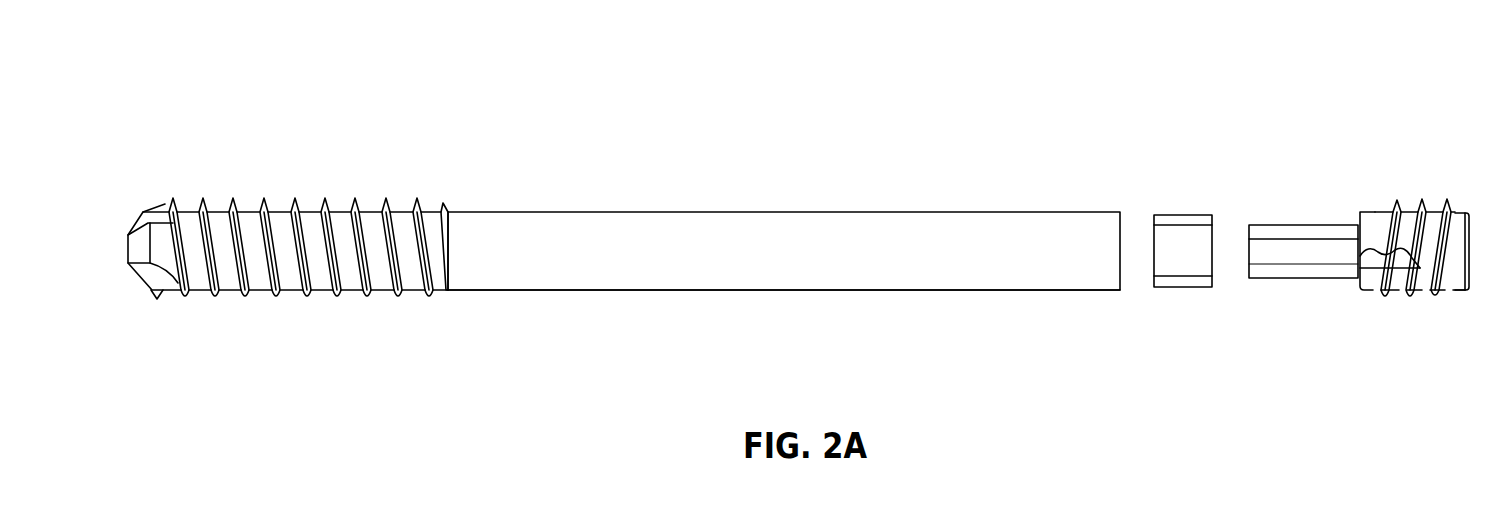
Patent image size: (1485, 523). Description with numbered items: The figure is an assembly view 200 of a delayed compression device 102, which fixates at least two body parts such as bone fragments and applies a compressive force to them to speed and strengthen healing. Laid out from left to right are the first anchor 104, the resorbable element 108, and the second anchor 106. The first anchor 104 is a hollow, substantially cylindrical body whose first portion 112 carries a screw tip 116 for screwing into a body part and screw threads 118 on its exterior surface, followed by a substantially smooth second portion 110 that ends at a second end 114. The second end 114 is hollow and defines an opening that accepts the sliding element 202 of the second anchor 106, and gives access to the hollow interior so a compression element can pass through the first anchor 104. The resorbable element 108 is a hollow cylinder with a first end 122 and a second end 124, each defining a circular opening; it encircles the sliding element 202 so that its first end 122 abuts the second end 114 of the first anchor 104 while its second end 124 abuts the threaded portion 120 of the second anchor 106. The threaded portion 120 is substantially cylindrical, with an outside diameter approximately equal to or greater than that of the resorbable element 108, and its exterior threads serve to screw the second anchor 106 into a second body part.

The delayed compression device 102 is at (590, 128).
The first anchor 104 is at (448, 210).
The second anchor 106 is at (1395, 210).
The resorbable element 108 is at (1184, 215).
The second portion 110 is at (768, 212).
The first portion 112 is at (320, 207).
The second end 114 is at (810, 290).
The screw tip 116 is at (126, 250).
The screw threads 118 is at (324, 294).
The threaded portion 120 is at (1413, 298).
The first end 122 is at (1160, 289).
The second end 124 is at (1198, 289).
The screw assembly 200 is at (1255, 72).
The sliding element 202 is at (1307, 278).